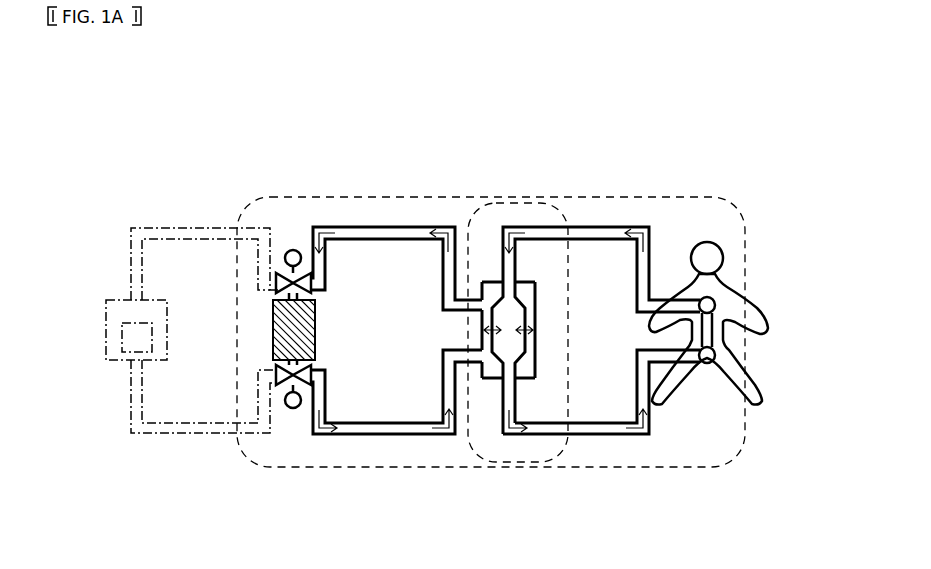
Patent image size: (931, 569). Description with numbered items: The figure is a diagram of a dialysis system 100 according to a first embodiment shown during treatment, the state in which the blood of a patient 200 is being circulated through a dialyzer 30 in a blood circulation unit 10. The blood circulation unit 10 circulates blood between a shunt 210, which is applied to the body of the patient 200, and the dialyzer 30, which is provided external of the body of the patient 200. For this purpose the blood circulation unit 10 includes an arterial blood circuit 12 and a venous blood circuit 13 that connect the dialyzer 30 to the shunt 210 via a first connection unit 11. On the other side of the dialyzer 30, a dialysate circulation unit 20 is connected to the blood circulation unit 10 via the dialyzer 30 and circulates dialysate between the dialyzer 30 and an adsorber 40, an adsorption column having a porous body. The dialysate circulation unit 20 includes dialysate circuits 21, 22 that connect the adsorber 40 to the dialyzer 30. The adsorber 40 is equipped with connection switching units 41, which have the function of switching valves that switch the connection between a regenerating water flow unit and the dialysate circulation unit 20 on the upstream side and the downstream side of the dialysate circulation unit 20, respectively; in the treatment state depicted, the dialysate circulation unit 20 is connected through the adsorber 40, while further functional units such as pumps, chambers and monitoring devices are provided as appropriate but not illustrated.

The dialysis system 100 is at (224, 105).
The blood circulation unit 10 is at (715, 200).
The first connection unit 11 is at (715, 305).
The arterial blood circuit 12 is at (596, 332).
The venous blood circuit 13 is at (622, 437).
The dialysate circulation unit 20 is at (392, 317).
The dialysate circuit 21 is at (420, 228).
The dialysate circuit 22 is at (420, 437).
The dialyzer 30 is at (486, 295).
The adsorber 40 is at (283, 318).
The connection switching units 41 is at (290, 282).
The patient 200 is at (723, 250).
The shunt 210 is at (715, 335).